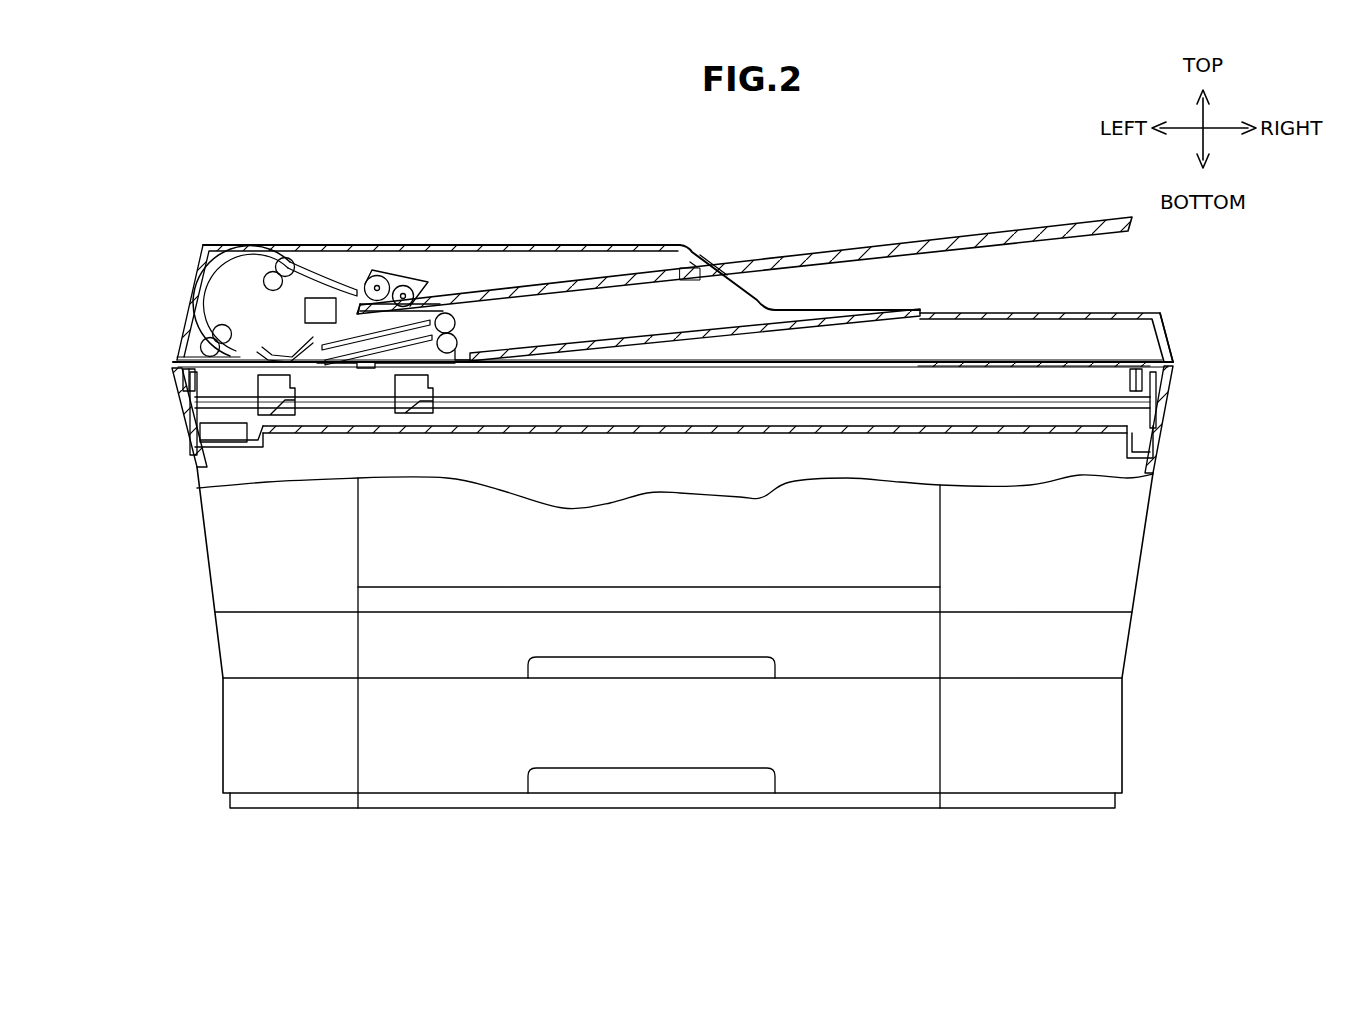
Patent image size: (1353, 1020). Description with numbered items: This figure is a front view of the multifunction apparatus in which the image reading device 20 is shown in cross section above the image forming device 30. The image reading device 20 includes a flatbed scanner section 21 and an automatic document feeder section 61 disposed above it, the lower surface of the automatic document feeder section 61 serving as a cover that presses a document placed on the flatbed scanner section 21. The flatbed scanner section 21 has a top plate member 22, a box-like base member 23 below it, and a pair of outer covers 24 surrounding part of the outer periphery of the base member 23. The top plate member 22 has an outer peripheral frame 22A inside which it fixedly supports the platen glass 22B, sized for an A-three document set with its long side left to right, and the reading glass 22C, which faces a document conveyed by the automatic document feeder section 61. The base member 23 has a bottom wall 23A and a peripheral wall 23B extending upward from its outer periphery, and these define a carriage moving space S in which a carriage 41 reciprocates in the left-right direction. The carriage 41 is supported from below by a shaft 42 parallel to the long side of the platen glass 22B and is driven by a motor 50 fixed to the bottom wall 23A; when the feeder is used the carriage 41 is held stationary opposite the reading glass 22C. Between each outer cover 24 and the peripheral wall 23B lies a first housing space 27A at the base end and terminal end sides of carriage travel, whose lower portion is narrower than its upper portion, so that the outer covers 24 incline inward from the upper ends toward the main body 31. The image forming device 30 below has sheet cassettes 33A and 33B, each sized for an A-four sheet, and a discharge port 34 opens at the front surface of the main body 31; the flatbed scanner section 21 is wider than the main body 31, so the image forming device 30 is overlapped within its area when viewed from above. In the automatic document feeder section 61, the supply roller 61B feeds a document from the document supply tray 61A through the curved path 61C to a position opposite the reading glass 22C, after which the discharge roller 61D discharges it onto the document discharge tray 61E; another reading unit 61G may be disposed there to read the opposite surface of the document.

The image reading device 20 is at (1160, 291).
The flatbed scanner section 21 is at (165, 376).
The top plate member 22 is at (181, 366).
The outer peripheral frame 22A is at (1133, 355).
The platen glass 22B is at (918, 374).
The reading glass 22C is at (280, 362).
The base member 23 is at (612, 437).
The bottom wall 23A is at (467, 432).
The peripheral wall 23B is at (1148, 392).
The outer cover 24 is at (175, 395).
The first housing space 27A is at (187, 410).
The image forming device 30 is at (1152, 548).
The main body 31 is at (1128, 585).
The sheet cassette 33A is at (905, 738).
The sheet cassette 33B is at (905, 658).
The discharge port 34 is at (459, 561).
The carriage 41 is at (292, 405).
The shaft 42 is at (835, 400).
The motor 50 is at (238, 437).
The automatic document feeder section 61 is at (575, 243).
The document supply tray 61A is at (494, 298).
The supply roller 61B is at (398, 272).
The curved path 61C is at (225, 245).
The discharge roller 61D is at (458, 340).
The document discharge tray 61E is at (628, 352).
The reading unit 61G is at (323, 306).
The carriage moving space S is at (668, 420).